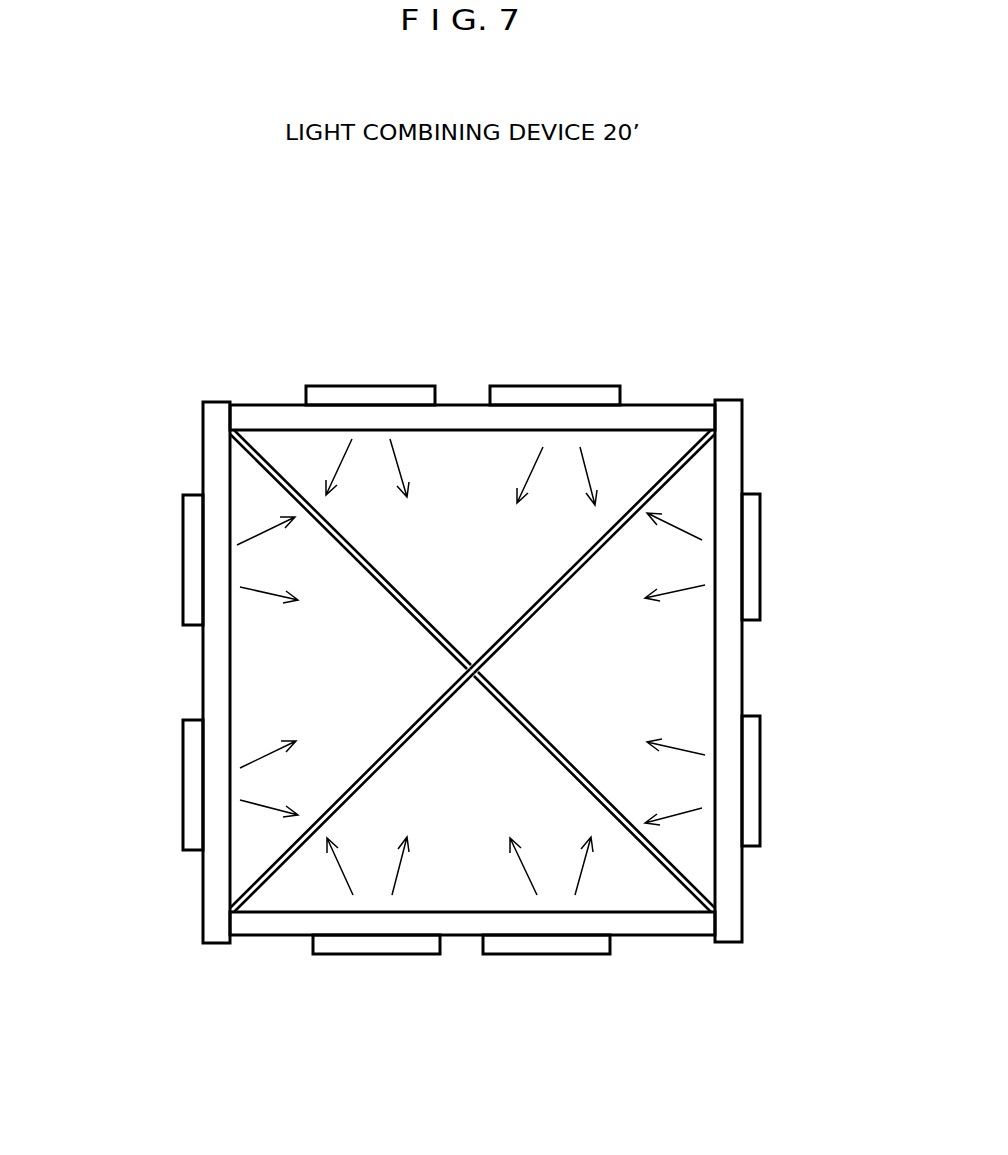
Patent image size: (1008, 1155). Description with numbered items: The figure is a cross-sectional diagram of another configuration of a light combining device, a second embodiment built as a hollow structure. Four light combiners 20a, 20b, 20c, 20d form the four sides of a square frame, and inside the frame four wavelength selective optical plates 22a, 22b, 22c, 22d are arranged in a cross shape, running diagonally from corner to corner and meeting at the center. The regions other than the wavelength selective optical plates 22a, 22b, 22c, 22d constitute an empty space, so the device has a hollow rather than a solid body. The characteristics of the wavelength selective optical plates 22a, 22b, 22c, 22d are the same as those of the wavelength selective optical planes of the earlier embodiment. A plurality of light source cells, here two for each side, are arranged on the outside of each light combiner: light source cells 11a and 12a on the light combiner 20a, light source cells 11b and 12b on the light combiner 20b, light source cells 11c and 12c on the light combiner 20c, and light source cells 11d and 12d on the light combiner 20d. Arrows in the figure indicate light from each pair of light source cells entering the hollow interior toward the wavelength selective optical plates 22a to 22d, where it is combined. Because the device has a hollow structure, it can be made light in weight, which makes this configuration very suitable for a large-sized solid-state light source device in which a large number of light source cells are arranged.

The light combiner 20a is at (465, 426).
The light combiner 20b is at (215, 672).
The light combiner 20c is at (468, 922).
The light combiner 20d is at (723, 673).
The light source cell 11a is at (355, 388).
The light source cell 12a is at (581, 388).
The light source cell 11b is at (190, 770).
The light source cell 12b is at (190, 548).
The light source cell 11c is at (360, 957).
The light source cell 12c is at (542, 957).
The light source cell 11d is at (753, 537).
The light source cell 12d is at (753, 760).
The wavelength selective optical plate 22a is at (665, 467).
The wavelength selective optical plate 22b is at (258, 467).
The wavelength selective optical plate 22c is at (268, 878).
The wavelength selective optical plate 22d is at (688, 880).